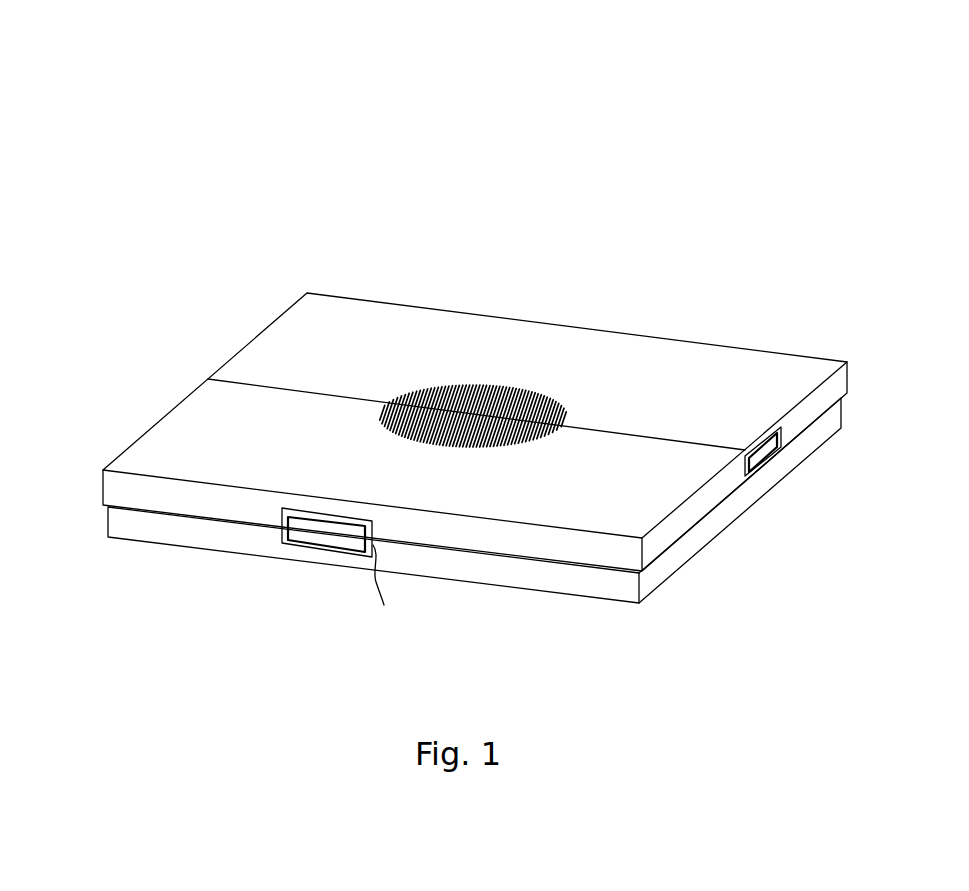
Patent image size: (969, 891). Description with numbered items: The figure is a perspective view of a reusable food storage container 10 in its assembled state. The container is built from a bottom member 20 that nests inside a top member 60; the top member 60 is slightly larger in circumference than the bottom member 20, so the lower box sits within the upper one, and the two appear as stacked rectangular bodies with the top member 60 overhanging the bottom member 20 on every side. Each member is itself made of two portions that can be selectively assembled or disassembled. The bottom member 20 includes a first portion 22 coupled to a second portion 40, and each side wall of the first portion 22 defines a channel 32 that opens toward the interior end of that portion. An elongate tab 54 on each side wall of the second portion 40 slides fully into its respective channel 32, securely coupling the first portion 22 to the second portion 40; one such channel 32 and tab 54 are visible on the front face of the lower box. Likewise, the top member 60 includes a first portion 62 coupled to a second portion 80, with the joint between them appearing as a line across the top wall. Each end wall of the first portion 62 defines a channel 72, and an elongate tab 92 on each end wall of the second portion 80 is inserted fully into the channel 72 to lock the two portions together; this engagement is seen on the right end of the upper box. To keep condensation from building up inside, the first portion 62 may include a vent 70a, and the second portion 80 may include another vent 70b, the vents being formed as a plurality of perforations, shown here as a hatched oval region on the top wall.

The food storage container 10 is at (204, 73).
The bottom member 20 is at (727, 575).
The first portion of the bottom member 22 is at (180, 560).
The channel 32 is at (300, 546).
The second portion of the bottom member 40 is at (490, 595).
The tab 54 is at (342, 535).
The top member 60 is at (180, 364).
The first portion of the top member 62 is at (376, 320).
The vent 70a is at (485, 392).
The vent 70b is at (467, 460).
The channel 72 is at (753, 473).
The second portion of the top member 80 is at (170, 445).
The tab 92 is at (770, 452).